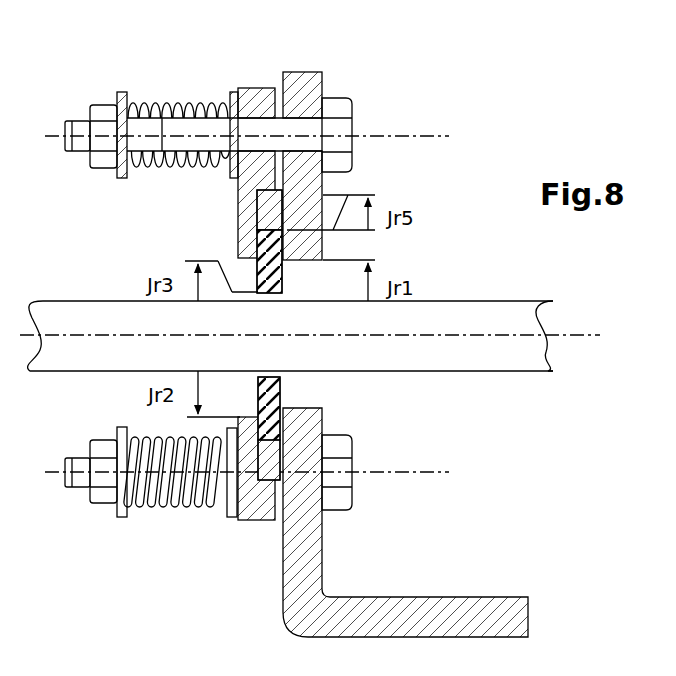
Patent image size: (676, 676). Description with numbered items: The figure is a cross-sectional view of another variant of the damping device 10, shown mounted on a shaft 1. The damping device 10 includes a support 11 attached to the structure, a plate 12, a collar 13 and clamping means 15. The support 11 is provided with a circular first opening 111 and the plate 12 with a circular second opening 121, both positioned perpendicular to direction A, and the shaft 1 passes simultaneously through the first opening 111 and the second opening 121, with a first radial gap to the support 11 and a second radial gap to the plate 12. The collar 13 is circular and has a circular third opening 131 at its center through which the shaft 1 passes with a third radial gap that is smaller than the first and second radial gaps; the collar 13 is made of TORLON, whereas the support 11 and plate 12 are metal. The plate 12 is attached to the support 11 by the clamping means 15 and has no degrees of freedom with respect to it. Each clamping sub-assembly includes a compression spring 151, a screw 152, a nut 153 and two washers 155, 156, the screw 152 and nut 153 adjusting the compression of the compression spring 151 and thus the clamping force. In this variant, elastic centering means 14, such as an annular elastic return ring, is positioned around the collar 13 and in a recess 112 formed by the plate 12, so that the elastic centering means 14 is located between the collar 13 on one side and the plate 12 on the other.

The shaft 1 is at (483, 312).
The damping device 10 is at (466, 129).
The support 11 is at (463, 613).
The first opening 111 is at (313, 262).
The recess 112 is at (270, 483).
The plate 12 is at (253, 512).
The second opening 121 is at (250, 268).
The collar 13 is at (295, 479).
The third opening 131 is at (269, 377).
The elastic centering means 14 is at (258, 213).
The clamping means 15 is at (206, 305).
The compression spring 151 is at (170, 100).
The screw 152 is at (333, 105).
The nut 153 is at (95, 162).
The washer 155 is at (118, 92).
The washer 156 is at (233, 90).